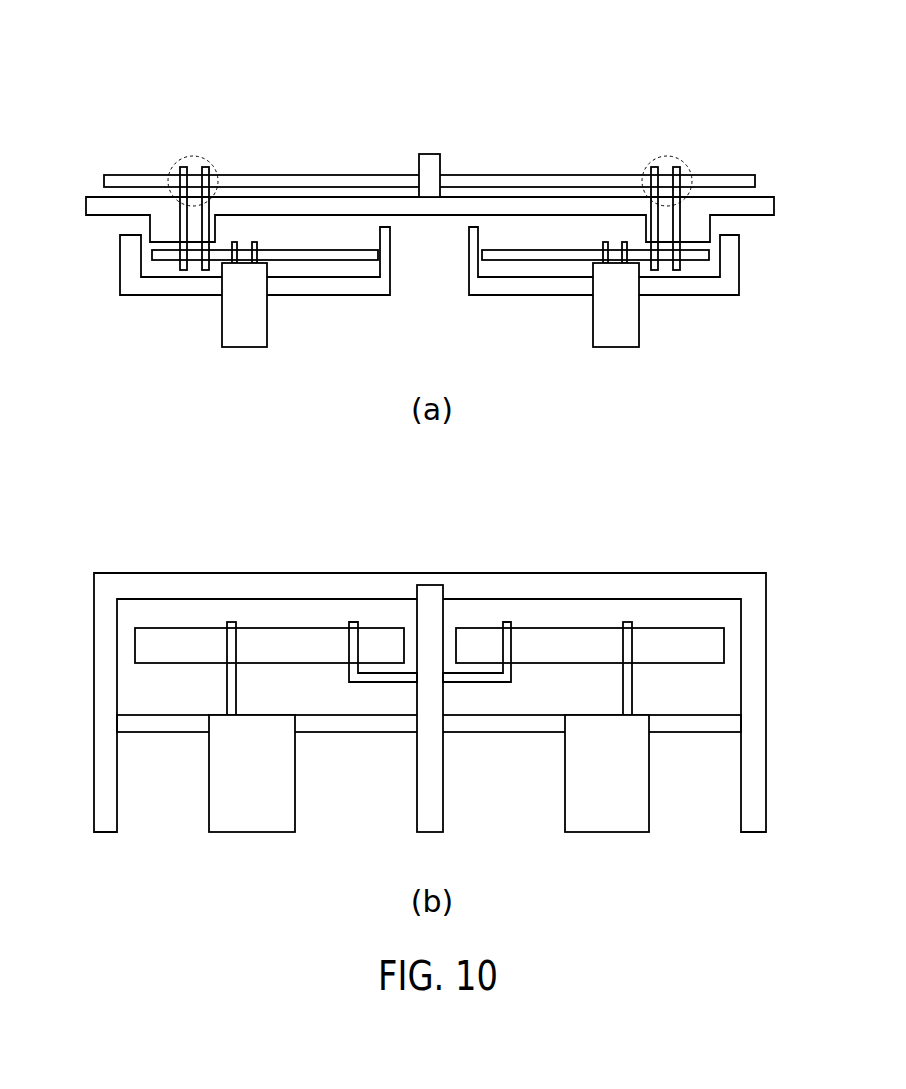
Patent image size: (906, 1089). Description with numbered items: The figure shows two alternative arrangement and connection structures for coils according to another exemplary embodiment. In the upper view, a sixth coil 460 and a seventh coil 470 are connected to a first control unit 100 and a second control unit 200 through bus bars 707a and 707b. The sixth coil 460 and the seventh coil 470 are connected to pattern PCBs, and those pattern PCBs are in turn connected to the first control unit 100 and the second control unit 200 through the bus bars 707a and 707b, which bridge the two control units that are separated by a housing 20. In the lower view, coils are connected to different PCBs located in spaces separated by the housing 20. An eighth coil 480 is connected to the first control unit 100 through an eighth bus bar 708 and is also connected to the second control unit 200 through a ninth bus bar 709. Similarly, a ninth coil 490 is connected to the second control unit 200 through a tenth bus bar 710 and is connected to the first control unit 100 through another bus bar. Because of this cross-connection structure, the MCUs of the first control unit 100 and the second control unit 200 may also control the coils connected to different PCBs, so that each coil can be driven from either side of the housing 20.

The housing 20 is at (430, 154).
The first control unit 100 is at (290, 177).
The second control unit 200 is at (527, 177).
The bus bar 707a is at (192, 156).
The bus bar 707b is at (663, 155).
The sixth coil 460 is at (268, 323).
The seventh coil 470 is at (592, 322).
The eighth bus bar 708 is at (228, 620).
The ninth bus bar 709 is at (410, 676).
The tenth bus bar 710 is at (627, 620).
The eighth coil 480 is at (284, 807).
The ninth coil 490 is at (575, 803).